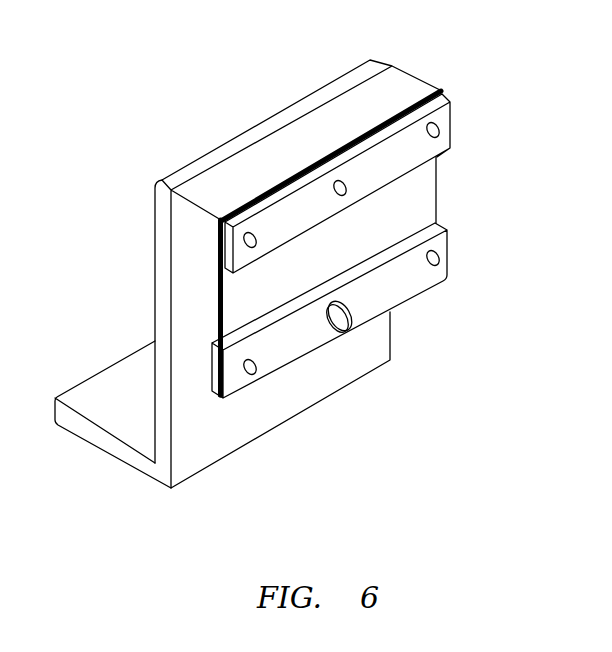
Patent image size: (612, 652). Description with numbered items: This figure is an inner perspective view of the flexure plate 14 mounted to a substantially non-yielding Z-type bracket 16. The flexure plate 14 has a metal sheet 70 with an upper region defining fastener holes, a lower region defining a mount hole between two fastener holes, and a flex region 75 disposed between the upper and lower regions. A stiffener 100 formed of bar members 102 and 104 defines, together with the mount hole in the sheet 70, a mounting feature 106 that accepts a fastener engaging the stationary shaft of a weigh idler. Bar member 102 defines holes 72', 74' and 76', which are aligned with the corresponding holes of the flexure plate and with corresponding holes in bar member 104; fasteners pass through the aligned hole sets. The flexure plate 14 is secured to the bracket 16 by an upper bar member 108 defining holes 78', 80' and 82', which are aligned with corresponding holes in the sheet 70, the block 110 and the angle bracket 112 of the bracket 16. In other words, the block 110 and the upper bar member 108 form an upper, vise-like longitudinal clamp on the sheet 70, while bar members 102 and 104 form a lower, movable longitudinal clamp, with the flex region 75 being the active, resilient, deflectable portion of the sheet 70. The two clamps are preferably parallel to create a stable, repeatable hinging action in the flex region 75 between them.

The flexure plate 14 is at (300, 262).
The Z-type bracket 16 is at (264, 244).
The metal sheet 70 is at (442, 187).
The hole 72' is at (382, 363).
The hole 74' is at (475, 271).
The flex region 75 is at (240, 305).
The hole 76' is at (277, 408).
The hole 78' is at (239, 168).
The hole 80' is at (321, 123).
The hole 82' is at (417, 76).
The stiffener 100 is at (330, 268).
The bar member 102 is at (427, 293).
The bar member 104 is at (213, 348).
The mounting feature 106 is at (345, 320).
The upper bar member 108 is at (450, 112).
The block 110 is at (208, 187).
The angle bracket 112 is at (97, 397).